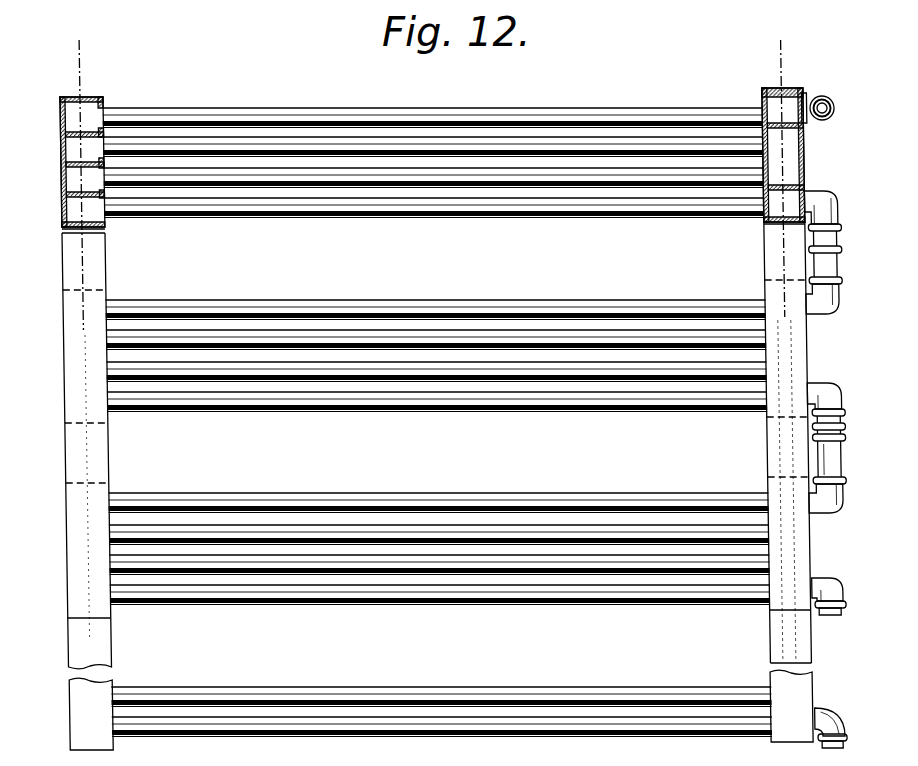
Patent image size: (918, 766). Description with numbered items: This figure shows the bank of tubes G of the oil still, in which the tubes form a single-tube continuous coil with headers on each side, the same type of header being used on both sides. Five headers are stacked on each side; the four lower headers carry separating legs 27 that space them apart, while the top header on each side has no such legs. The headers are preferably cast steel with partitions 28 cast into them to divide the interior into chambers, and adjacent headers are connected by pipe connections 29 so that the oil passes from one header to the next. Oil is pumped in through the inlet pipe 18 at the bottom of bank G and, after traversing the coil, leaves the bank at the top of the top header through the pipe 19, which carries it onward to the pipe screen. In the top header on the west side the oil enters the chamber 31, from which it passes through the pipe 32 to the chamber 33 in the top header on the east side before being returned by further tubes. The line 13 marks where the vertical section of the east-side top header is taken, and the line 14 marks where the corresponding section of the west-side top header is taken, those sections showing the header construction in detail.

The section line 13 is at (89, 84).
The section line 14 is at (764, 73).
The inlet pipe 18 is at (818, 737).
The outlet pipe 19 is at (820, 96).
The separating legs 27 is at (88, 278).
The partitions 28 is at (777, 373).
The pipe connections 29 is at (818, 267).
The chamber 31 is at (783, 199).
The pipe 32 is at (547, 173).
The chamber 33 is at (102, 218).
The bank of tubes G is at (419, 268).